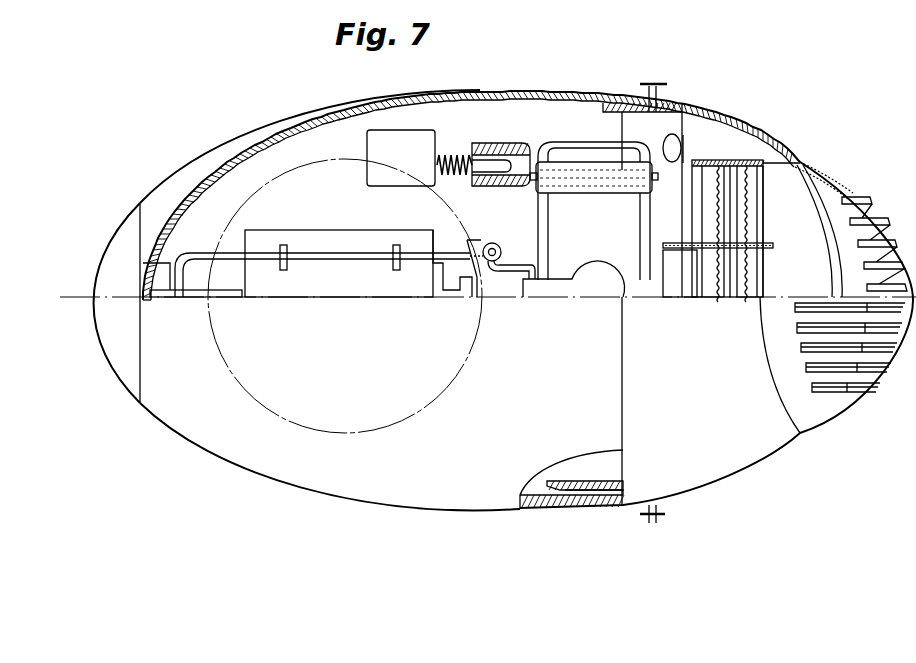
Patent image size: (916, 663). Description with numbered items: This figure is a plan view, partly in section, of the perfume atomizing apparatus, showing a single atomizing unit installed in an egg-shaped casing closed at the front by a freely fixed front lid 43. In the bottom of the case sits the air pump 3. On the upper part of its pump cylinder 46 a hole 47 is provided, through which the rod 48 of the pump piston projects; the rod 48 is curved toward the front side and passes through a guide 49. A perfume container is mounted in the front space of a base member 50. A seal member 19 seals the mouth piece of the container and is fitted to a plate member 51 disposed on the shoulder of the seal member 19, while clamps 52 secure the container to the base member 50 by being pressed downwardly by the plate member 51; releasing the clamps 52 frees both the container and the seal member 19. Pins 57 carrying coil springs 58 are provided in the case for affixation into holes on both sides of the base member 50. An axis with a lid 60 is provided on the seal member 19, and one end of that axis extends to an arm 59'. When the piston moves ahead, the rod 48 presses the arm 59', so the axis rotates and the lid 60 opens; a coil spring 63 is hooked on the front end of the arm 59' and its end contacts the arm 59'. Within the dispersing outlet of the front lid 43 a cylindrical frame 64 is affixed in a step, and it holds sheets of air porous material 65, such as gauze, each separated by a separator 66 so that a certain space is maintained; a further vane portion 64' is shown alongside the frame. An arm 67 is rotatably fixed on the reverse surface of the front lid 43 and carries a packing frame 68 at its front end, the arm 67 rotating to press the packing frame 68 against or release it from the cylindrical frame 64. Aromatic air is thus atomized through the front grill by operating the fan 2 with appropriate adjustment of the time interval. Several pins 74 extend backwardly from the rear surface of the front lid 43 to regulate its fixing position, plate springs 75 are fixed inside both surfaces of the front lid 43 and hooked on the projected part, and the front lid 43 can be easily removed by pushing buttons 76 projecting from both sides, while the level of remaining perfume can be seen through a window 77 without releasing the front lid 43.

The fan 2 is at (300, 169).
The air pump 3 is at (335, 233).
The seal member 19 is at (625, 292).
The front lid 43 is at (748, 128).
The pump cylinder 46 is at (195, 272).
The hole 47 is at (196, 306).
The rod 48 is at (363, 253).
The guide 49 is at (285, 263).
The base member 50 is at (543, 228).
The plate member 51 is at (563, 152).
The clamps 52 is at (582, 170).
The pins 57 is at (497, 158).
The coil springs 58 is at (457, 150).
The arm 59' is at (511, 298).
The lid 60 is at (591, 291).
The coil spring 63 is at (488, 240).
The cylindrical frame 64 is at (767, 282).
The vane 64' is at (783, 231).
The air porous material 65 is at (717, 298).
The separator 66 is at (731, 300).
The arm 67 is at (675, 246).
The packing frame 68 is at (702, 176).
The pins 74 is at (596, 499).
The plate springs 75 is at (632, 110).
The buttons 76 is at (655, 83).
The window 77 is at (678, 148).